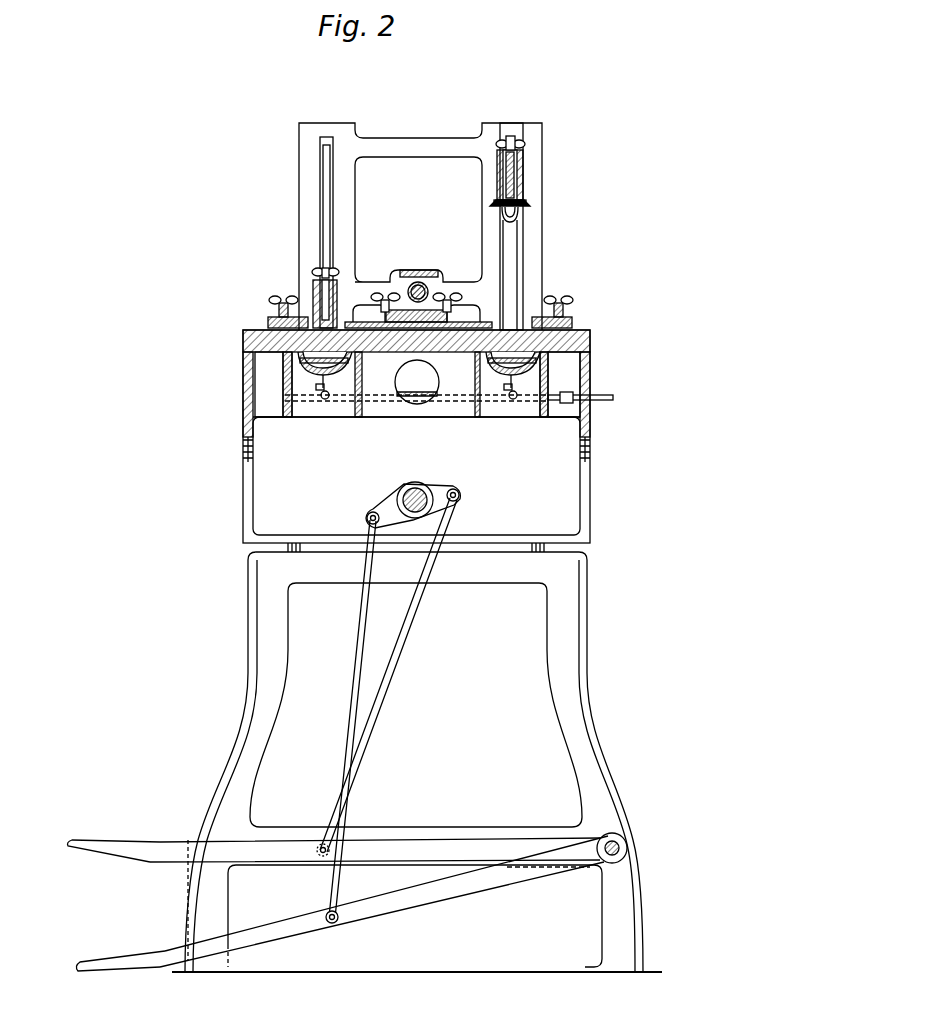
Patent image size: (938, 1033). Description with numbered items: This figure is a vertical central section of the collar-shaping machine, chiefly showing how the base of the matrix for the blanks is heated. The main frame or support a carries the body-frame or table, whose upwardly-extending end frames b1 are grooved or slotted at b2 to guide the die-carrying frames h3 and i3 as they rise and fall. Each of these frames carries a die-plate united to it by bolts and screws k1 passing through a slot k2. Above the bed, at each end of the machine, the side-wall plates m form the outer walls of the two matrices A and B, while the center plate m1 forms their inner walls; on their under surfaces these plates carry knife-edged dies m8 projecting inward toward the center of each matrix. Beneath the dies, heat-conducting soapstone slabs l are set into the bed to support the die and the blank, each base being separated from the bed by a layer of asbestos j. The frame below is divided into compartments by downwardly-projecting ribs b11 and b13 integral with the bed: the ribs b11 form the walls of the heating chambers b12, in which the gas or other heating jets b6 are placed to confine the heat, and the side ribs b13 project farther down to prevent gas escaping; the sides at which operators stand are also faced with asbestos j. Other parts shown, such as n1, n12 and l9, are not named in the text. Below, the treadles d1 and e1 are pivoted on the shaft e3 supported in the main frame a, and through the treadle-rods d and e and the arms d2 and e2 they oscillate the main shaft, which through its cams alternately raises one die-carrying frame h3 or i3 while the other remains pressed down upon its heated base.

The end frame b1 is at (300, 145).
The groove or slot b2 is at (327, 190).
The die-carrying frame h3 is at (320, 292).
The side-wall plate m is at (272, 315).
The matrix die m8 is at (268, 327).
The matrix B is at (350, 298).
The matrix A is at (480, 298).
The bar n1 is at (418, 272).
The pin n12 is at (424, 287).
The bolts and screws k1 is at (508, 181).
The die-carrying frame i3 is at (518, 168).
The slot k2 is at (527, 194).
The asbestos layer j is at (243, 400).
The heat-conducting slab l is at (278, 373).
The center plate m1 is at (384, 352).
The downwardly-projecting rib b11 is at (296, 418).
The heating jet b6 is at (325, 380).
The heating chamber b12 is at (350, 405).
The side rib b13 is at (253, 440).
The rod l9 is at (606, 394).
The arm e2 is at (440, 492).
The arm d2 is at (385, 508).
The main frame a is at (257, 677).
The treadle-rod d is at (358, 690).
The treadle-rod e is at (380, 695).
The treadle e1 is at (367, 845).
The treadle shaft e3 is at (628, 848).
The treadle d1 is at (390, 908).